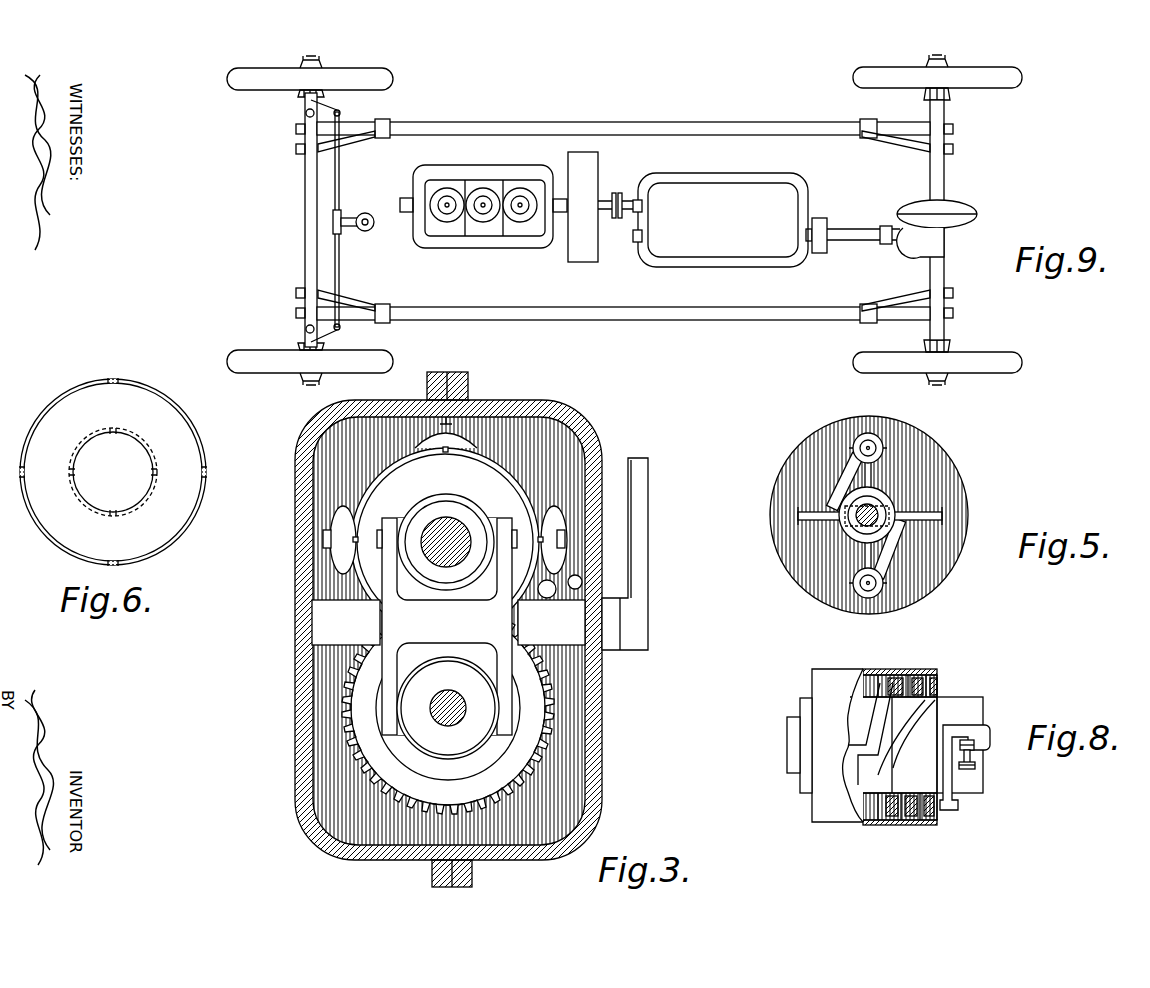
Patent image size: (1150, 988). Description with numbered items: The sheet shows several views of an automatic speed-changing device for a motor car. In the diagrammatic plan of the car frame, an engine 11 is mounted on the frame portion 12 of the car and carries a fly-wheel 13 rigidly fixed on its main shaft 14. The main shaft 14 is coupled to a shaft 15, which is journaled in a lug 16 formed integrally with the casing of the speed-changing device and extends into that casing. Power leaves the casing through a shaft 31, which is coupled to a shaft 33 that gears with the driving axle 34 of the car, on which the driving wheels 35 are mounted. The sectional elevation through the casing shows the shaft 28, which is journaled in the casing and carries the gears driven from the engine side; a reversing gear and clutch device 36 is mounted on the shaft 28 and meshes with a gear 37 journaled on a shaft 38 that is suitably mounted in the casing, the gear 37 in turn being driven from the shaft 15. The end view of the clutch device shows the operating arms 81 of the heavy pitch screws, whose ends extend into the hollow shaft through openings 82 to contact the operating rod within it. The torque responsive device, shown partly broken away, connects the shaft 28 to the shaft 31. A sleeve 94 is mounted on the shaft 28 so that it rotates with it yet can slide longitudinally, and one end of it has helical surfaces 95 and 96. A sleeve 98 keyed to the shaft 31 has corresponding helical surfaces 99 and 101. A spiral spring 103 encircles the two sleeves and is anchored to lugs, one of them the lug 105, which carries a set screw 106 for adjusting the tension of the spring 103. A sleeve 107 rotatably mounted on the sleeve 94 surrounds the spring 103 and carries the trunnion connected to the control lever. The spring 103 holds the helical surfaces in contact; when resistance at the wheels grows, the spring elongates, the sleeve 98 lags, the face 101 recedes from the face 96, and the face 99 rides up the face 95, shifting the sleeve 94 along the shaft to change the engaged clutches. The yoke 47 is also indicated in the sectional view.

In FIG. 9, the engine 11 is at (483, 193).
In FIG. 9, the frame portion 12 is at (532, 130).
In FIG. 9, the fly-wheel 13 is at (585, 168).
In FIG. 9, the main shaft 14 is at (612, 192).
In FIG. 9, the shaft 15 is at (641, 200).
In FIG. 9, the lug 16 is at (636, 213).
In FIG. 9, the shaft 31 is at (820, 253).
In FIG. 9, the shaft 33 is at (857, 237).
In FIG. 9, the driving axle 34 is at (937, 178).
In FIG. 9, the driving wheels 35 is at (1013, 79).
In FIG. 3, the shaft 28 is at (440, 717).
In FIG. 3, the reversing gear and clutch device 36 is at (517, 759).
In FIG. 3, the gear 37 is at (571, 578).
In FIG. 3, the shaft 38 is at (548, 589).
In FIG. 3, the yoke 47 is at (408, 622).
In FIG. 5, the operating arms 81 is at (888, 555).
In FIG. 5, the openings 82 is at (892, 508).
In FIG. 8, the sleeve 94 is at (858, 752).
In FIG. 8, the helical surface 95 is at (913, 820).
In FIG. 8, the helical surface 96 is at (945, 810).
In FIG. 8, the sleeve 98 is at (955, 707).
In FIG. 8, the helical surface 99 is at (940, 684).
In FIG. 8, the helical surface 101 is at (935, 730).
In FIG. 8, the spiral spring 103 is at (868, 695).
In FIG. 8, the lug 105 is at (973, 745).
In FIG. 8, the set screw 106 is at (968, 770).
In FIG. 8, the sleeve 107 is at (828, 668).